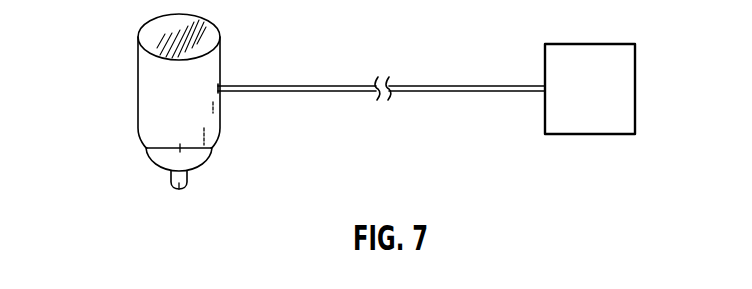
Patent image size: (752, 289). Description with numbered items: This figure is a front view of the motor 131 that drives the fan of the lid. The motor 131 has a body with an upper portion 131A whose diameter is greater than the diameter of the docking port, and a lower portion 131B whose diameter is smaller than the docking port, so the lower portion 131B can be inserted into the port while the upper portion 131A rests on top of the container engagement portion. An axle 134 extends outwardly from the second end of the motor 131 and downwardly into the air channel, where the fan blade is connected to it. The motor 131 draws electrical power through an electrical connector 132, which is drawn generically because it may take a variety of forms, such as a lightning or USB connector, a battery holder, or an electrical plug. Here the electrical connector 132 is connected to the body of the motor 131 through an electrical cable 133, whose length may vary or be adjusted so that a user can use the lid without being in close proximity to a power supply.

The motor 131 is at (138, 60).
The upper portion 131A is at (148, 118).
The lower portion 131B is at (204, 152).
The electrical connector 132 is at (613, 101).
The electrical cable 133 is at (280, 86).
The axle 134 is at (178, 191).